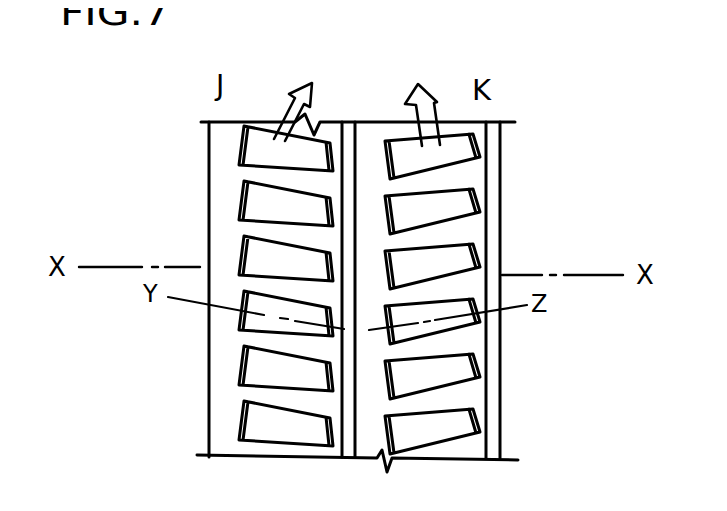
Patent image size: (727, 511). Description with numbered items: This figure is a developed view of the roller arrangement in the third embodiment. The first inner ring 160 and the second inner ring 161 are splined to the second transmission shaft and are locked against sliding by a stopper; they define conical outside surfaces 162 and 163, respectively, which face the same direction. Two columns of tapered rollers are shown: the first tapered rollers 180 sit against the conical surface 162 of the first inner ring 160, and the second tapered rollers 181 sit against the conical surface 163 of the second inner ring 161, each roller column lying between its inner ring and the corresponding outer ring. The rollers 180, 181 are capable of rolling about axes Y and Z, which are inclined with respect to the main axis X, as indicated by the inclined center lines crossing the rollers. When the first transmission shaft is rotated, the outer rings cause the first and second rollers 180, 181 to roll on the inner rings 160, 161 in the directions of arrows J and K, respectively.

The first inner ring 160 is at (218, 244).
The second inner ring 161 is at (477, 240).
The conical outside surface 162 is at (223, 341).
The conical outside surface 163 is at (483, 342).
The first tapered rollers 180 is at (238, 195).
The second tapered rollers 181 is at (475, 195).